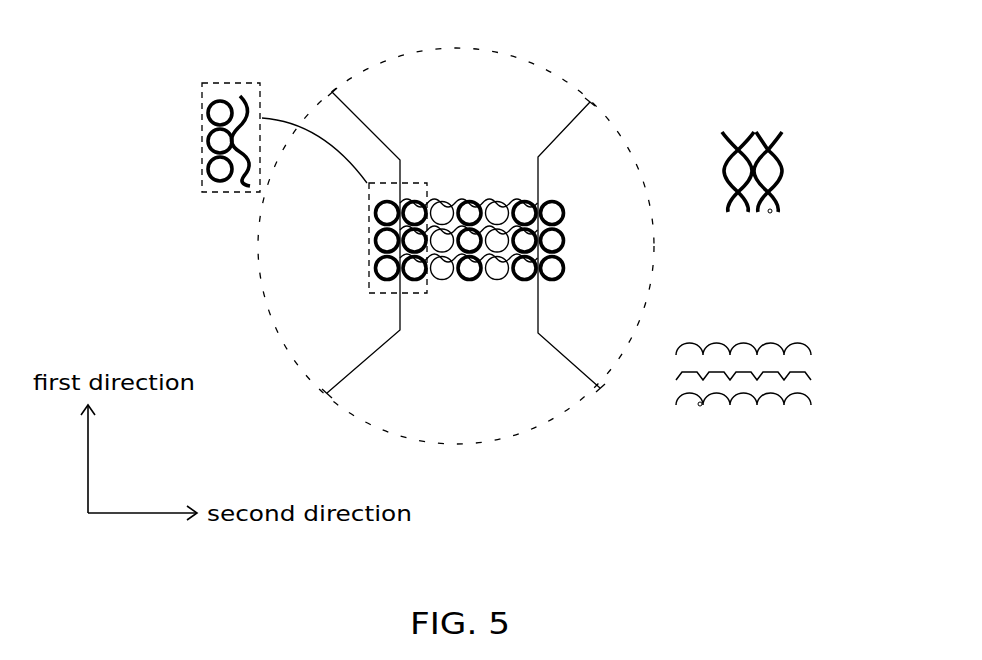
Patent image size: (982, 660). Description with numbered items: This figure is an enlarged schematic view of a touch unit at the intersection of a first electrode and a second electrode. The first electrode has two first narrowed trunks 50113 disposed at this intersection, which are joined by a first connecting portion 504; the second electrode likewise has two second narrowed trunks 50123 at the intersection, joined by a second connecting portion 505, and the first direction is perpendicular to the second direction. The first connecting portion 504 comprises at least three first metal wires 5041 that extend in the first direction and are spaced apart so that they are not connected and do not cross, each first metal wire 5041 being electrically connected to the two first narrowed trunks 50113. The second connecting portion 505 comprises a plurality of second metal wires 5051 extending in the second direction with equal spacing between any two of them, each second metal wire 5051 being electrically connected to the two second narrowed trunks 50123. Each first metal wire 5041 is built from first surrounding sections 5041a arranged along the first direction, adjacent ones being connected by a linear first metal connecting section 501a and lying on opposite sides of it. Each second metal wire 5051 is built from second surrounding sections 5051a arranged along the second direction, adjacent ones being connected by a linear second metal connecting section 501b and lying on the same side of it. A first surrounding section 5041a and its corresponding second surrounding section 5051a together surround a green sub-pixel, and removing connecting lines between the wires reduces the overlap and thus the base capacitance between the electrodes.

The first narrowed trunk 50113 is at (450, 58).
The second narrowed trunk 50123 is at (278, 235).
The first connecting portion 504 is at (785, 156).
The first metal wire 5041 is at (770, 137).
The first surrounding section 5041a is at (794, 190).
The first metal connecting section 501a is at (769, 213).
The second connecting portion 505 is at (778, 367).
The second metal wire 5051 is at (808, 347).
The second surrounding section 5051a is at (808, 397).
The second metal connecting section 501b is at (700, 406).